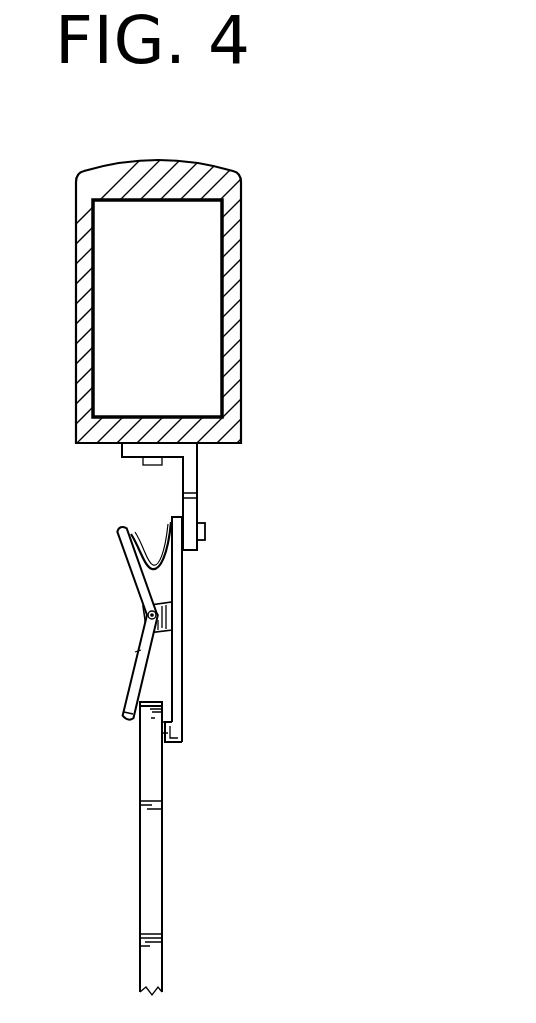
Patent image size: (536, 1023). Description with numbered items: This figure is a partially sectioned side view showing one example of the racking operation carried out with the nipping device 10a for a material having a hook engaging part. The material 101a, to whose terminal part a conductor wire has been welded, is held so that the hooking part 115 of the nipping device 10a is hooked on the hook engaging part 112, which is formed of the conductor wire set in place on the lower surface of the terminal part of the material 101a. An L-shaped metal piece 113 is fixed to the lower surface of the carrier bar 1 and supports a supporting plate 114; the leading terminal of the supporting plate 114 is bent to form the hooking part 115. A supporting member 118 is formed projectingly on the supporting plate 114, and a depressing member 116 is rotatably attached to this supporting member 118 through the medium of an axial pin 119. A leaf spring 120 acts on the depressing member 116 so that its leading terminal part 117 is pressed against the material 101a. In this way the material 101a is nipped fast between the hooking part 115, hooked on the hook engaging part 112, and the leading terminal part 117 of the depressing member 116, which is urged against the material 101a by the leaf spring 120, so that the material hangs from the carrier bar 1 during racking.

The carrier bar 1 is at (76, 323).
The nipping device 10a is at (121, 626).
The material 101a is at (139, 857).
The hook engaging part 112 is at (174, 724).
The L-shaped metal piece 113 is at (197, 491).
The supporting plate 114 is at (184, 655).
The hooking part 115 is at (179, 746).
The depressing member 116 is at (130, 672).
The leading terminal part 117 is at (128, 722).
The supporting member 118 is at (182, 614).
The axial pin 119 is at (147, 611).
The leaf spring 120 is at (146, 545).